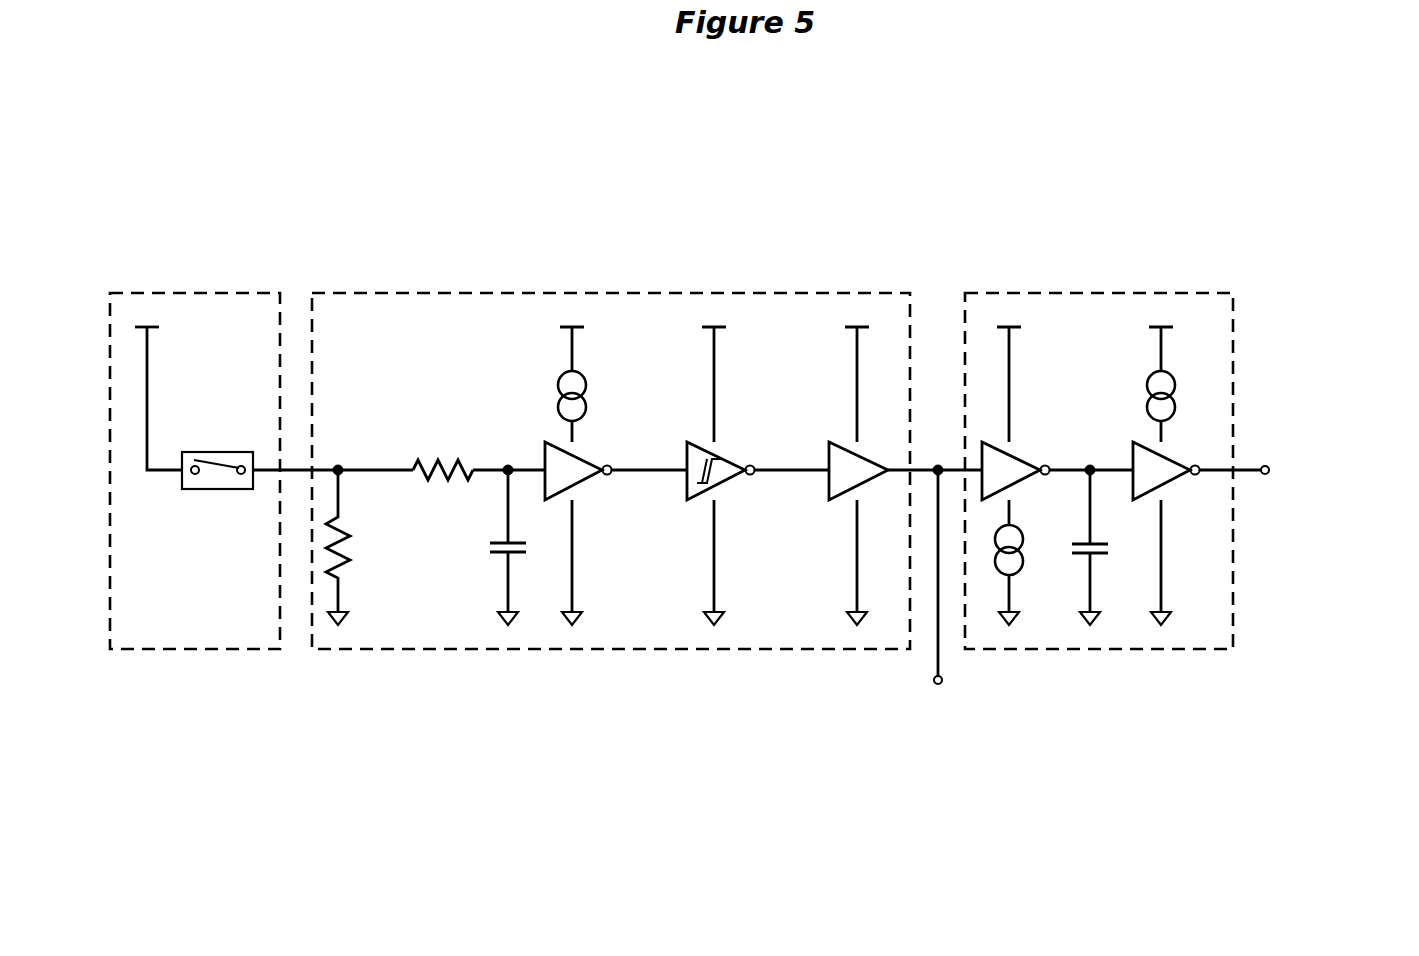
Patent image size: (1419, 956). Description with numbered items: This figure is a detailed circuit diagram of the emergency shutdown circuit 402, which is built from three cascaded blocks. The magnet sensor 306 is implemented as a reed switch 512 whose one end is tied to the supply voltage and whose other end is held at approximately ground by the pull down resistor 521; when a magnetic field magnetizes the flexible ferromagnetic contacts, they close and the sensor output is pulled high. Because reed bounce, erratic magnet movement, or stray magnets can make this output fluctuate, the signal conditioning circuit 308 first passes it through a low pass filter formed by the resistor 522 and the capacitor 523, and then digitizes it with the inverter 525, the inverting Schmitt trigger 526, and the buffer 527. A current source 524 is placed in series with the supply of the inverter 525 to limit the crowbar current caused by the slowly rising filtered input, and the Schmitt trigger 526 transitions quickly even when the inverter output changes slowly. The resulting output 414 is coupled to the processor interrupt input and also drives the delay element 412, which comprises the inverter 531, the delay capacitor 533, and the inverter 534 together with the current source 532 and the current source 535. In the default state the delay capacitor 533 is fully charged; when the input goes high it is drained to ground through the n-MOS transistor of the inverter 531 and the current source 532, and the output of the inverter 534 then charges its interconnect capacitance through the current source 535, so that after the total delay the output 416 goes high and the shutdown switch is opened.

The emergency shutdown circuit 402 is at (1010, 84).
The magnet sensor 306 is at (280, 297).
The signal conditioning circuit 308 is at (857, 293).
The delay element 412 is at (1192, 293).
The output of the signal conditioning circuit 414 is at (944, 671).
The output of the delay element 416 is at (1252, 470).
The reed switch 512 is at (236, 490).
The pull down resistor 521 is at (352, 534).
The resistor R_f 522 is at (458, 465).
The capacitor C_f 523 is at (506, 540).
The current source 524 is at (581, 378).
The inverter 525 is at (584, 487).
The Schmitt trigger 526 is at (728, 482).
The buffer 527 is at (870, 480).
The inverter 531 is at (1020, 462).
The current source 532 is at (1047, 519).
The delay capacitor 533 is at (1095, 555).
The inverter 534 is at (1178, 486).
The current source 535 is at (1151, 378).